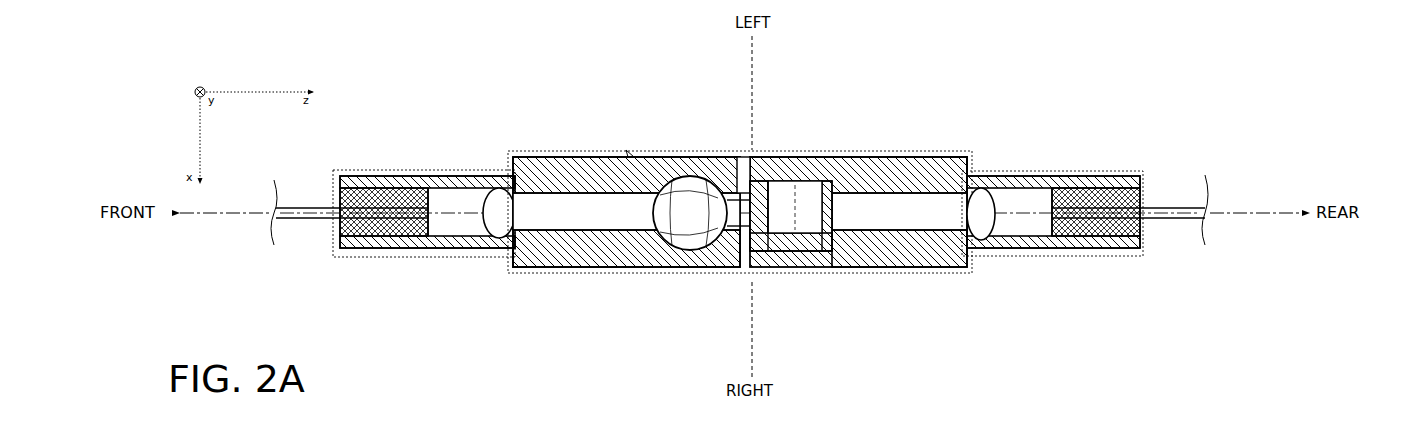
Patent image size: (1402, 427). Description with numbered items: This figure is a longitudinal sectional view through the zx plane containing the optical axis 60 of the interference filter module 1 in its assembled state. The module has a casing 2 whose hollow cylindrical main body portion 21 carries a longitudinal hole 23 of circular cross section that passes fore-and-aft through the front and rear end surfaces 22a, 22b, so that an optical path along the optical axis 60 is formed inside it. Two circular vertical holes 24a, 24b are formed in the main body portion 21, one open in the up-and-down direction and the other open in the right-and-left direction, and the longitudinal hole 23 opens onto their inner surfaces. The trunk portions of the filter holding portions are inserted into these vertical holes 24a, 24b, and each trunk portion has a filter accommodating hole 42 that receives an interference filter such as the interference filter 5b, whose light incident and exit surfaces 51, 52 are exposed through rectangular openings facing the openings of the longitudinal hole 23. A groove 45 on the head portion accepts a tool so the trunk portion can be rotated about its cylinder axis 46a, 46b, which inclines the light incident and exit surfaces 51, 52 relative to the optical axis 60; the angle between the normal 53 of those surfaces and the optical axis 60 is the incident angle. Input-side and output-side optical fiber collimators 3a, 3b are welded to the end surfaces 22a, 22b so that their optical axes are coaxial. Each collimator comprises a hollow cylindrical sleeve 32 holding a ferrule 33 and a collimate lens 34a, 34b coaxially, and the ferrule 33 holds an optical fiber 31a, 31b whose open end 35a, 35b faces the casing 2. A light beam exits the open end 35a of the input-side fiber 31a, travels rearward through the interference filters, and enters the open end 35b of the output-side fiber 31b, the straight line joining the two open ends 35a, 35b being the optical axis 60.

The interference filter module 1 is at (528, 78).
The casing 2 is at (753, 212).
The main body portion 21 is at (915, 270).
The front end surface 22a is at (510, 266).
The rear end surface 22b is at (978, 170).
The longitudinal hole 23 is at (574, 157).
The vertical hole 24a is at (720, 157).
The vertical hole 24b is at (778, 272).
The optical fiber collimator 3a is at (736, 214).
The optical fiber collimator 3b is at (1052, 247).
The optical fiber 31a is at (312, 222).
The optical fiber 31b is at (1163, 220).
The sleeve 32 is at (400, 250).
The ferrule 33 is at (407, 176).
The collimate lens 34a is at (498, 188).
The collimate lens 34b is at (985, 245).
The open end 35a is at (434, 208).
The open end 35b is at (1048, 220).
The filter accommodating hole 42 is at (657, 157).
The groove 45 is at (792, 268).
The cylinder axis 46a is at (690, 270).
The cylinder axis 46b is at (810, 200).
The light incident surface 51 is at (755, 160).
The light exit surface 52 is at (742, 268).
The normal 53 is at (700, 157).
The interference filter 5b is at (793, 150).
The optical axis 60 is at (915, 150).